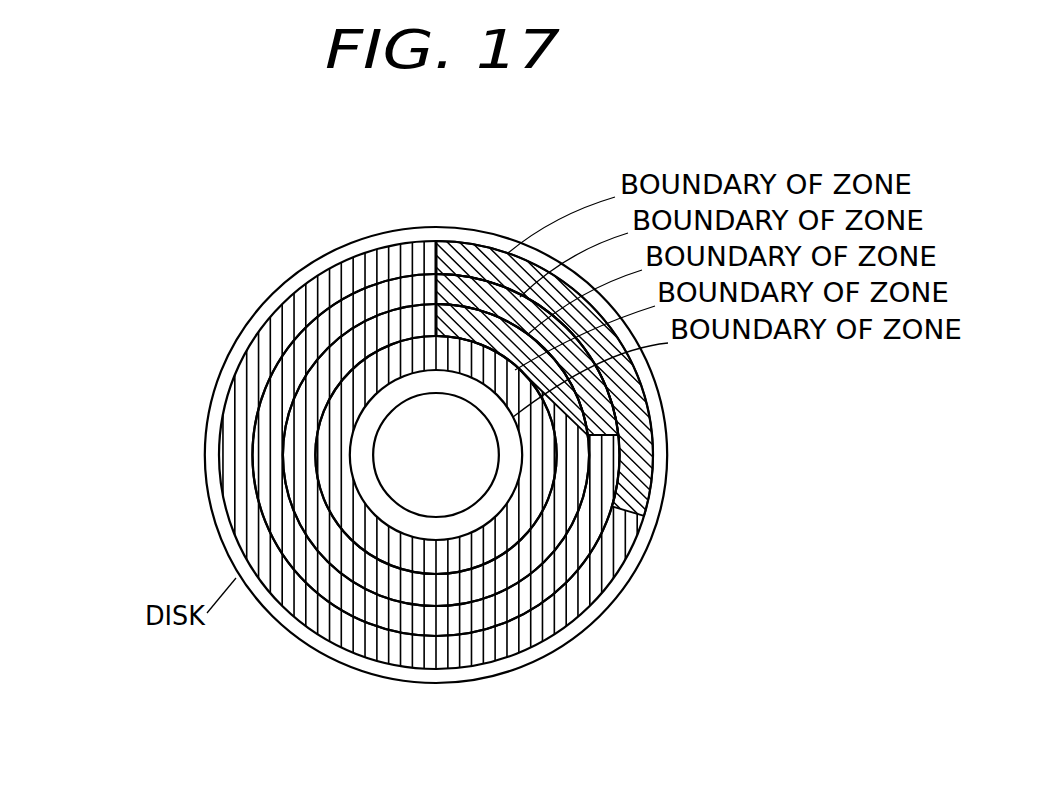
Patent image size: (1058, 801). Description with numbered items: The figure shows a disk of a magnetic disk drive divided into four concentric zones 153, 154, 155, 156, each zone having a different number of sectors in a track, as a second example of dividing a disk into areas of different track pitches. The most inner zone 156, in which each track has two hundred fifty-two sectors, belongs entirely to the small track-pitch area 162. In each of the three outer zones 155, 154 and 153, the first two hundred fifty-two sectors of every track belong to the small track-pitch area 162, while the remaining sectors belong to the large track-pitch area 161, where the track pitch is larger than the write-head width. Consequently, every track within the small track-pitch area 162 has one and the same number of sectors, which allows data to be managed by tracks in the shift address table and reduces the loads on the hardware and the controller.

The zone 153 is at (307, 308).
The zone 154 is at (315, 352).
The zone 155 is at (327, 393).
The most inner zone 156 is at (332, 432).
The large track-pitch area 161 is at (647, 508).
The small track-pitch area 162 is at (571, 603).